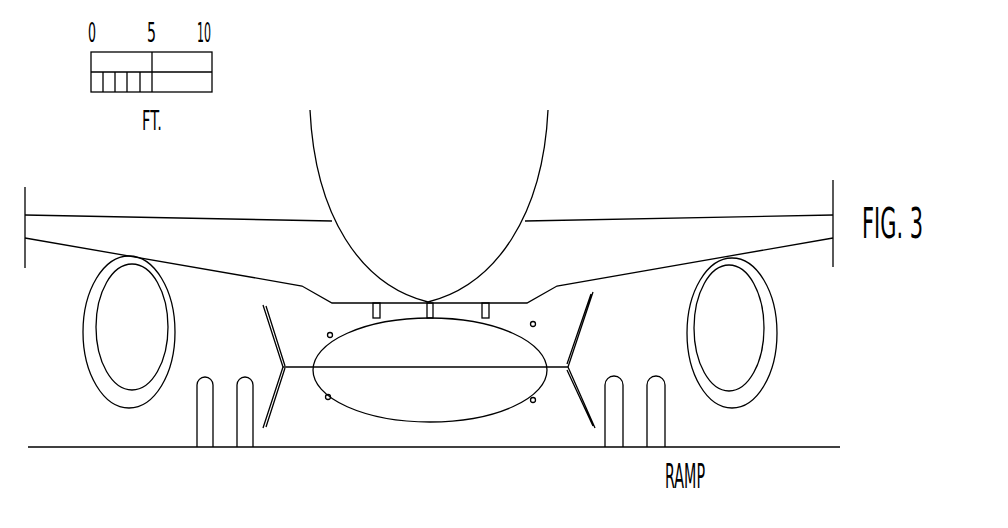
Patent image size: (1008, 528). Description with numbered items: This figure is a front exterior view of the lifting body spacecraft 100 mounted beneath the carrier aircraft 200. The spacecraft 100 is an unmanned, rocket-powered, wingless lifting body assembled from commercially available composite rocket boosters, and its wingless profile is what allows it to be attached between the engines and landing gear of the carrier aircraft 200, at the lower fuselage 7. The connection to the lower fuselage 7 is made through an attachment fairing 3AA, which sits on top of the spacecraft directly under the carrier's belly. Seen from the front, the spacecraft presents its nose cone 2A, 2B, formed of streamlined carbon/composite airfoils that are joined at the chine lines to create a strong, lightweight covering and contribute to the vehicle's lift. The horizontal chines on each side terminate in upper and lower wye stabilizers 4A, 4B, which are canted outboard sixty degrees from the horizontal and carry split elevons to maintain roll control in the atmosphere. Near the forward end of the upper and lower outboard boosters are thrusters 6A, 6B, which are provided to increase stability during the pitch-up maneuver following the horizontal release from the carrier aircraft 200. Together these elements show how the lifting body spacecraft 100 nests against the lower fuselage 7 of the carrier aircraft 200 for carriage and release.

The carrier aircraft 200 is at (107, 165).
The lifting body spacecraft 100 is at (423, 399).
The lower fuselage 7 is at (429, 206).
The attachment fairing 3AA is at (427, 301).
The nose cone 2A is at (387, 347).
The nose cone 2B is at (465, 390).
The thruster 6A is at (534, 327).
The thruster 6B is at (534, 401).
The upper wye stabilizer 4A is at (593, 318).
The lower wye stabilizer 4B is at (590, 380).